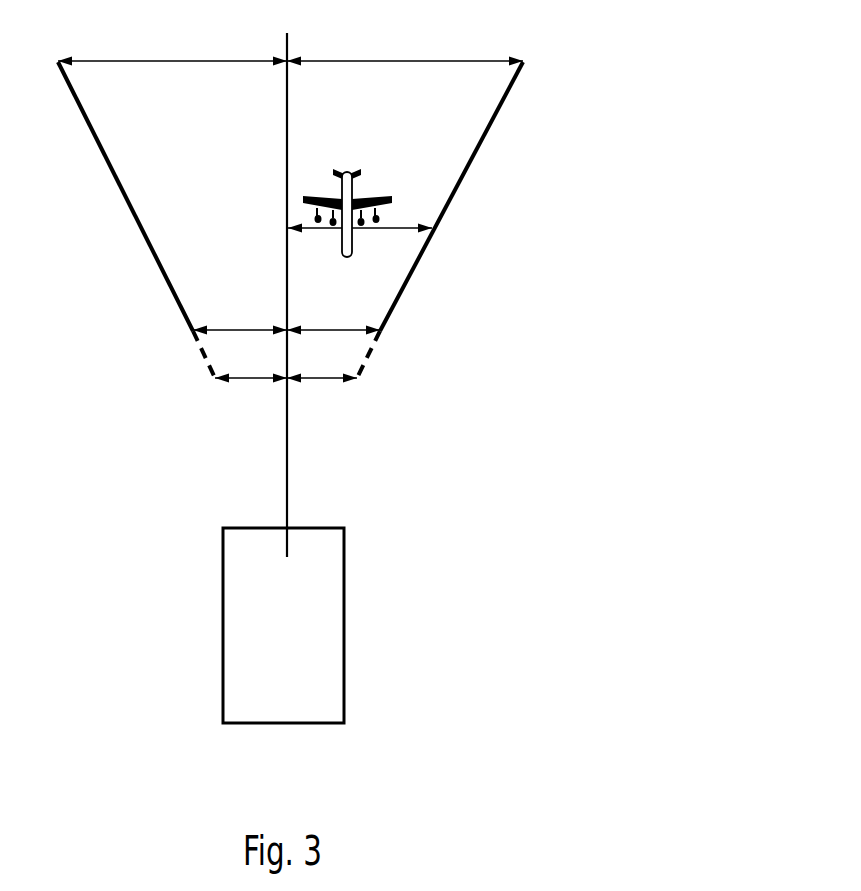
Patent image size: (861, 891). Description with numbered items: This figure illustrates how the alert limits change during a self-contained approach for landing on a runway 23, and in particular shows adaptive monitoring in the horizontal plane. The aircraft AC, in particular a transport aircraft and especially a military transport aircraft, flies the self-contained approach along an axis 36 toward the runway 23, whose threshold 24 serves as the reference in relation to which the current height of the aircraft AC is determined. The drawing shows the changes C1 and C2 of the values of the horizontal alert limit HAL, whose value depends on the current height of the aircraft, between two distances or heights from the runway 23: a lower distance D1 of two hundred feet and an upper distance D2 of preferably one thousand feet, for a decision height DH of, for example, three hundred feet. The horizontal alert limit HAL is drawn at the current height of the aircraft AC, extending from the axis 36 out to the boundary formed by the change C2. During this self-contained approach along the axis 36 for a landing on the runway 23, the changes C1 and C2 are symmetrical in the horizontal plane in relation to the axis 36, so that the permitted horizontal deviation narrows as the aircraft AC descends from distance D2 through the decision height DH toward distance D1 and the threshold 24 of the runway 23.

The axis 36 is at (287, 140).
The change of horizontal alert limit C1 is at (115, 178).
The change of horizontal alert limit C2 is at (427, 247).
The distance D2 is at (292, 56).
The decision height DH is at (290, 327).
The distance D1 is at (290, 376).
The horizontal alert limit HAL is at (392, 224).
The aircraft AC is at (356, 195).
The runway 23 is at (344, 608).
The threshold 24 is at (272, 518).